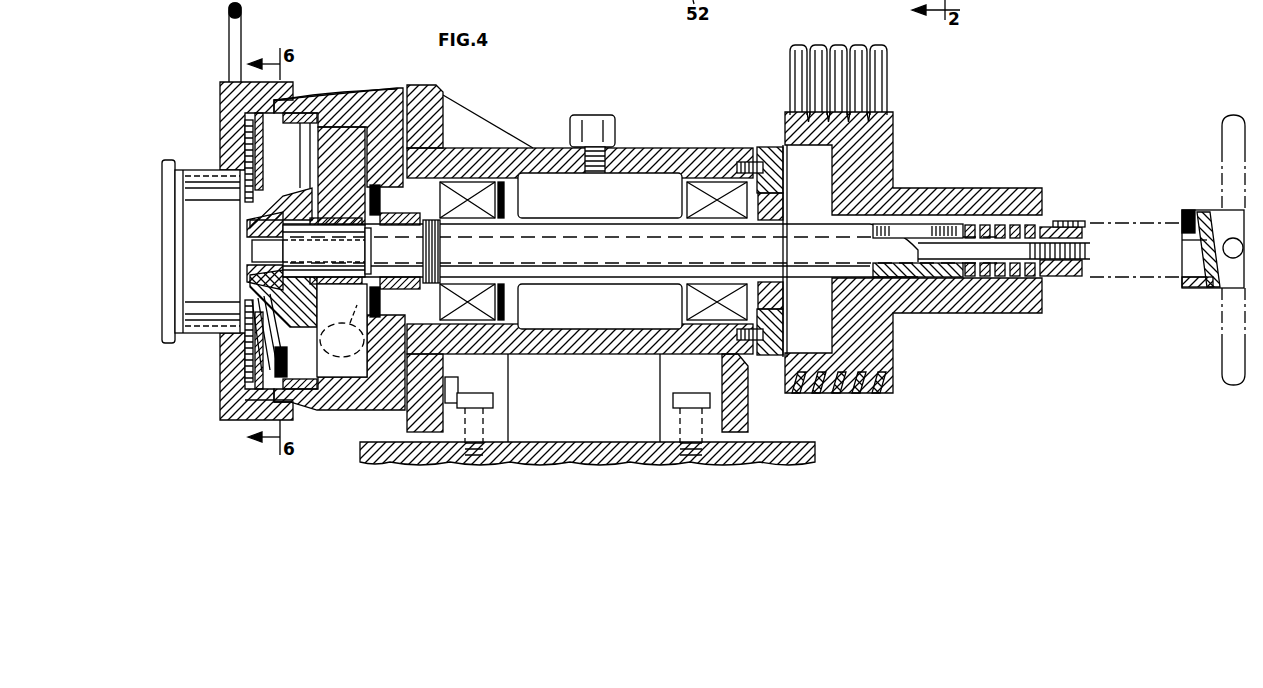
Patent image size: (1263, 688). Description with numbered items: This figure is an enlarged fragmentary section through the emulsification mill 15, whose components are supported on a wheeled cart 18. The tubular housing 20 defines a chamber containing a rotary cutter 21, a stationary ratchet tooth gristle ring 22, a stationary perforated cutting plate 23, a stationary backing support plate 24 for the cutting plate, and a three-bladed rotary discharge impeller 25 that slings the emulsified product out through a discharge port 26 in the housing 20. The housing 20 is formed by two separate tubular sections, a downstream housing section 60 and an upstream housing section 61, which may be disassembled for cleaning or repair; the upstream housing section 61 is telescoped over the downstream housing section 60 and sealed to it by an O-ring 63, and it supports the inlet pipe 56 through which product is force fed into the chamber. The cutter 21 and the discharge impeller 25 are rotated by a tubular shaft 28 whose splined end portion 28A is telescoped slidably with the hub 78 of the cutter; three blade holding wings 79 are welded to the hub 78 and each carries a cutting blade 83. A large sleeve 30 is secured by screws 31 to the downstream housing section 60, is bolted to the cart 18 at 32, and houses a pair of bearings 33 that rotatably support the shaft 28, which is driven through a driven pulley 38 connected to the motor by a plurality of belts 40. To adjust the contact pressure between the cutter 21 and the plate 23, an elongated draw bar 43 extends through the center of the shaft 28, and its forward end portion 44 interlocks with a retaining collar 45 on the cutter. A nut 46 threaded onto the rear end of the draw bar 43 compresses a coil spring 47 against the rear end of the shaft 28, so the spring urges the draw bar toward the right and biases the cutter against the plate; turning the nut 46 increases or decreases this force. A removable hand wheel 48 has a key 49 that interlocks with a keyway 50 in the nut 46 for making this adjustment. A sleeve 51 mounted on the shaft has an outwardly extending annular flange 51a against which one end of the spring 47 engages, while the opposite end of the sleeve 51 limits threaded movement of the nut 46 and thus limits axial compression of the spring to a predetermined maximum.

The mill 15 is at (643, 138).
The wheeled cart 18 is at (572, 442).
The tubular housing 20 is at (351, 88).
The rotary cutter 21 is at (264, 291).
The ratchet tooth gristle ring 22 is at (236, 395).
The perforated cutting plate 23 is at (312, 381).
The backing support plate 24 is at (322, 160).
The rotary discharge impeller 25 is at (360, 126).
The discharge port 26 is at (360, 299).
The tubular shaft 28 is at (615, 225).
The splined end portion 28A is at (641, 251).
The large sleeve 30 is at (655, 150).
The screws 31 is at (447, 86).
The bolts 32 is at (484, 393).
The bearings 33 is at (490, 310).
The driven pulley 38 is at (868, 345).
The belts 40 is at (886, 90).
The draw bar 43 is at (943, 250).
The forward end portion 44 is at (268, 251).
The retaining collar 45 is at (260, 229).
The nut 46 is at (1063, 278).
The coil spring 47 is at (1005, 222).
The hand wheel 48 is at (1237, 345).
The key 49 is at (1183, 226).
The keyway 50 is at (1073, 224).
The sleeve 51 is at (968, 225).
The annular flange 51a is at (963, 222).
The inlet pipe 56 is at (198, 170).
The downstream housing section 60 is at (324, 98).
The upstream housing section 61 is at (222, 84).
The O-ring 63 is at (293, 416).
The hub 78 is at (268, 202).
The blade holding wings 79 is at (258, 350).
The cutting blade 83 is at (276, 362).